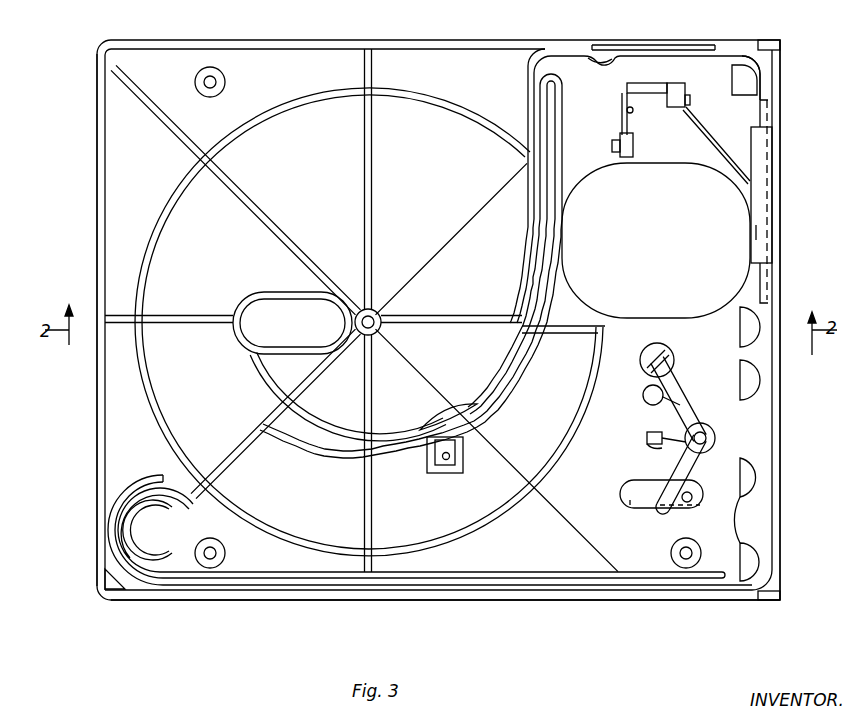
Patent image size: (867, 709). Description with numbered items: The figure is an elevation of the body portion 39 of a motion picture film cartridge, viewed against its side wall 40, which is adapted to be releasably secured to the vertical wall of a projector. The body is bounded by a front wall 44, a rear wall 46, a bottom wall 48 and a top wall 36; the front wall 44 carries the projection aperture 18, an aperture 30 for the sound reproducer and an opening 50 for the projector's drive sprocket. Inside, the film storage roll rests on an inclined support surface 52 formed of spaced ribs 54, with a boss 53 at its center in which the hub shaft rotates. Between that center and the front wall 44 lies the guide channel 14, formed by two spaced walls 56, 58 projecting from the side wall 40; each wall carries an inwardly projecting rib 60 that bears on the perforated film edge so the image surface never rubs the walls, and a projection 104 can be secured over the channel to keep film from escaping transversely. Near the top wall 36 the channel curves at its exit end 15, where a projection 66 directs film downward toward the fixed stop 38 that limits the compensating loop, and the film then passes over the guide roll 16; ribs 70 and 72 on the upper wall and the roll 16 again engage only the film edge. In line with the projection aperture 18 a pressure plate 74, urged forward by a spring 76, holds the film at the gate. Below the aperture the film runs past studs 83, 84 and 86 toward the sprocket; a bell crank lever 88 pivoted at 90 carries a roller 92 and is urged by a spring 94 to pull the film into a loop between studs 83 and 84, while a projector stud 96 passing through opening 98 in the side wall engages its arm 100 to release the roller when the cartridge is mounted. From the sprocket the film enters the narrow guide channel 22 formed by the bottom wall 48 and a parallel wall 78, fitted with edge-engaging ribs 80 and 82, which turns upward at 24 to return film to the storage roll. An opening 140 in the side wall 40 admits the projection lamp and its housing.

The guide channel 14 is at (498, 414).
The curved exit end of guide channel 15 is at (568, 80).
The guide roll 16 is at (735, 85).
The projection aperture 18 is at (776, 185).
The guide channel 22 is at (266, 570).
The upturned portion of guide channel 24 is at (134, 531).
The sound aperture 30 is at (784, 436).
The top wall 36 is at (418, 40).
The fixed stop 38 is at (648, 97).
The body portion 39 is at (88, 458).
The side wall 40 is at (104, 234).
The front wall 44 is at (786, 104).
The rear wall 46 is at (92, 268).
The bottom wall 48 is at (536, 598).
The opening 50 is at (776, 522).
The support surface 52 is at (303, 85).
The boss 53 is at (372, 308).
The spaced ribs 54 is at (237, 297).
The channel wall 56 is at (528, 278).
The channel wall 58 is at (545, 336).
The inwardly projecting rib 60 is at (508, 360).
The projection 66 is at (596, 68).
The rib 70 is at (726, 43).
The rib 72 is at (780, 75).
The pressure plate 74 is at (762, 229).
The spring 76 is at (712, 146).
The wall 78 is at (532, 572).
The rib 80 is at (228, 592).
The rib 82 is at (270, 590).
The stud 83 is at (738, 340).
The stud 84 is at (756, 384).
The stud 86 is at (757, 478).
The bell crank lever 88 is at (662, 406).
The pivot 90 is at (703, 452).
The roller 92 is at (668, 350).
The spring 94 is at (646, 432).
The stud 96 is at (690, 505).
The opening 98 is at (630, 510).
The arm 100 is at (670, 476).
The projection 104 is at (432, 458).
The opening 140 is at (576, 282).